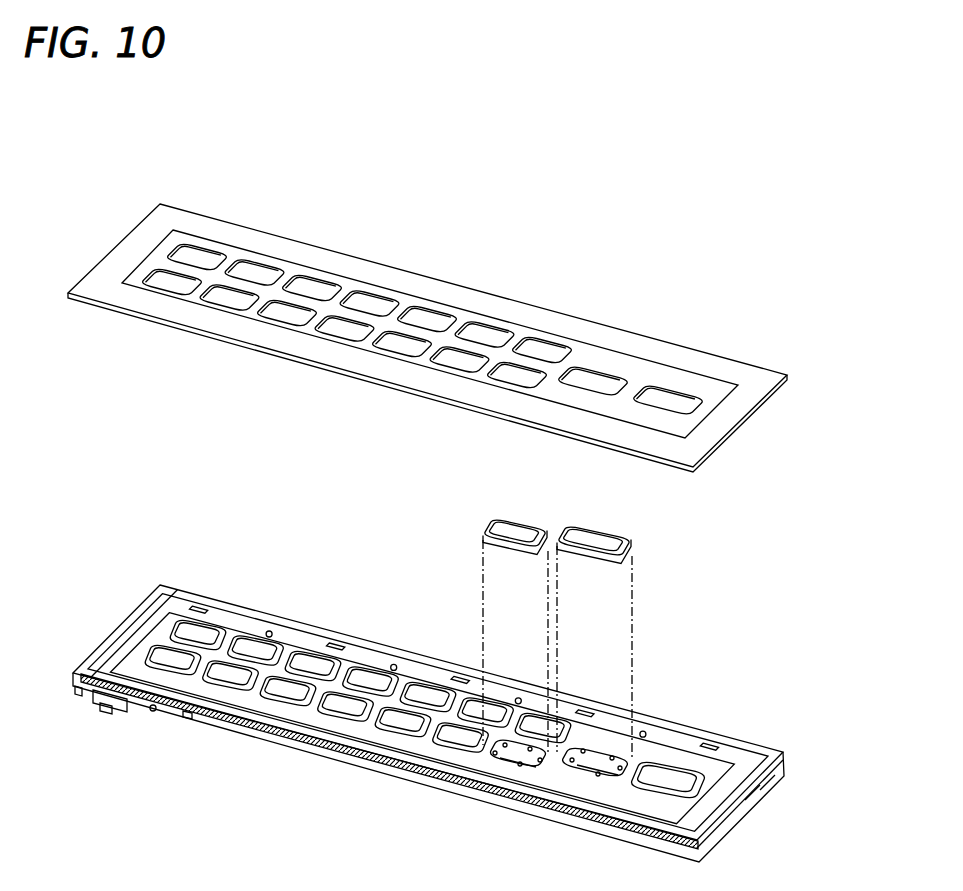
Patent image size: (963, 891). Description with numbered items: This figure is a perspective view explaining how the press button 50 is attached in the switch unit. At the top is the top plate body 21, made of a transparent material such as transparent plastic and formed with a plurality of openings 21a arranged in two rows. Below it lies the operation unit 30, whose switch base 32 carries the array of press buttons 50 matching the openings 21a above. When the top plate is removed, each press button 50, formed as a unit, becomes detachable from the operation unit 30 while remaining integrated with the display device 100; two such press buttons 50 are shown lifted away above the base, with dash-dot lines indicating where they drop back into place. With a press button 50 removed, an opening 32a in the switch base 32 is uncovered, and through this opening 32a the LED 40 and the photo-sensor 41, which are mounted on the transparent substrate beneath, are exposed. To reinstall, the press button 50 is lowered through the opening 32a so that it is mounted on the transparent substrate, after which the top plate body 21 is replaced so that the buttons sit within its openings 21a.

The top plate body 21 is at (640, 333).
The opening 21a is at (197, 248).
The operation unit 30 is at (692, 738).
The switch base 32 is at (707, 767).
The opening 32a is at (583, 748).
The LED 40 is at (600, 770).
The photo-sensor 41 is at (582, 770).
The press button 50 is at (590, 535).
The display device 100 is at (750, 801).